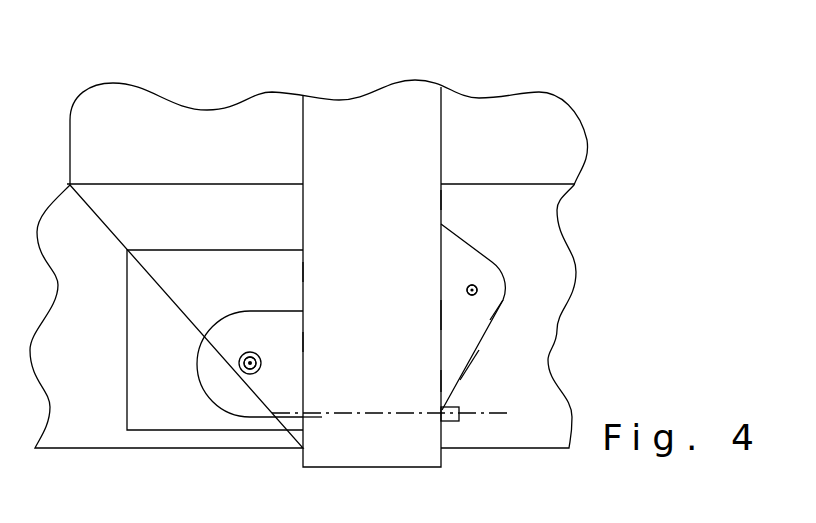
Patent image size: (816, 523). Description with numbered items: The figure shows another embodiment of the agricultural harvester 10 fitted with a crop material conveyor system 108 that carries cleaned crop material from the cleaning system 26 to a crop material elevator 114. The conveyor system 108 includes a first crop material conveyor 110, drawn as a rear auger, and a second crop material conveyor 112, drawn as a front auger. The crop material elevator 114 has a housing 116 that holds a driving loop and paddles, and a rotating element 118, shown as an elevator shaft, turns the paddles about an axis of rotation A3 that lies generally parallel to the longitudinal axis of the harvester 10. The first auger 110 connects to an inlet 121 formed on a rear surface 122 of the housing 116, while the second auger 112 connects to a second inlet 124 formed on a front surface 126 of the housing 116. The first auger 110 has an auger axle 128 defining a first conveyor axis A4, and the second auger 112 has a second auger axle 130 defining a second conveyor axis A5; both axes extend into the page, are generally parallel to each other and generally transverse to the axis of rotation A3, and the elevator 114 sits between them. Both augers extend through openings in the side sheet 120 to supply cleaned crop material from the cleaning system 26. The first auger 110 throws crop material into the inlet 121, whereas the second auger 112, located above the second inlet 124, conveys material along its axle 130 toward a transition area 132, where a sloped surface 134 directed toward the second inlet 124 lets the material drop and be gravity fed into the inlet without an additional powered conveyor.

The agricultural harvester 10 is at (462, 82).
The cleaning system 26 is at (247, 175).
The crop material conveyor system 108 is at (284, 234).
The first crop material conveyor 110 is at (217, 408).
The second crop material conveyor 112 is at (511, 275).
The crop material elevator 114 is at (377, 468).
The housing 116 is at (322, 387).
The rotating element 118 is at (454, 422).
The side sheet 120 is at (542, 359).
The inlet 121 is at (303, 342).
The rear surface 122 is at (303, 272).
The second inlet 124 is at (441, 381).
The front surface 126 is at (441, 200).
The auger axle 128 is at (245, 356).
The second auger axle 130 is at (472, 285).
The transition area 132 is at (482, 331).
The sloped surface 134 is at (495, 322).
The axis of rotation A3 is at (472, 415).
The first conveyor axis A4 is at (240, 366).
The second conveyor axis A5 is at (477, 292).